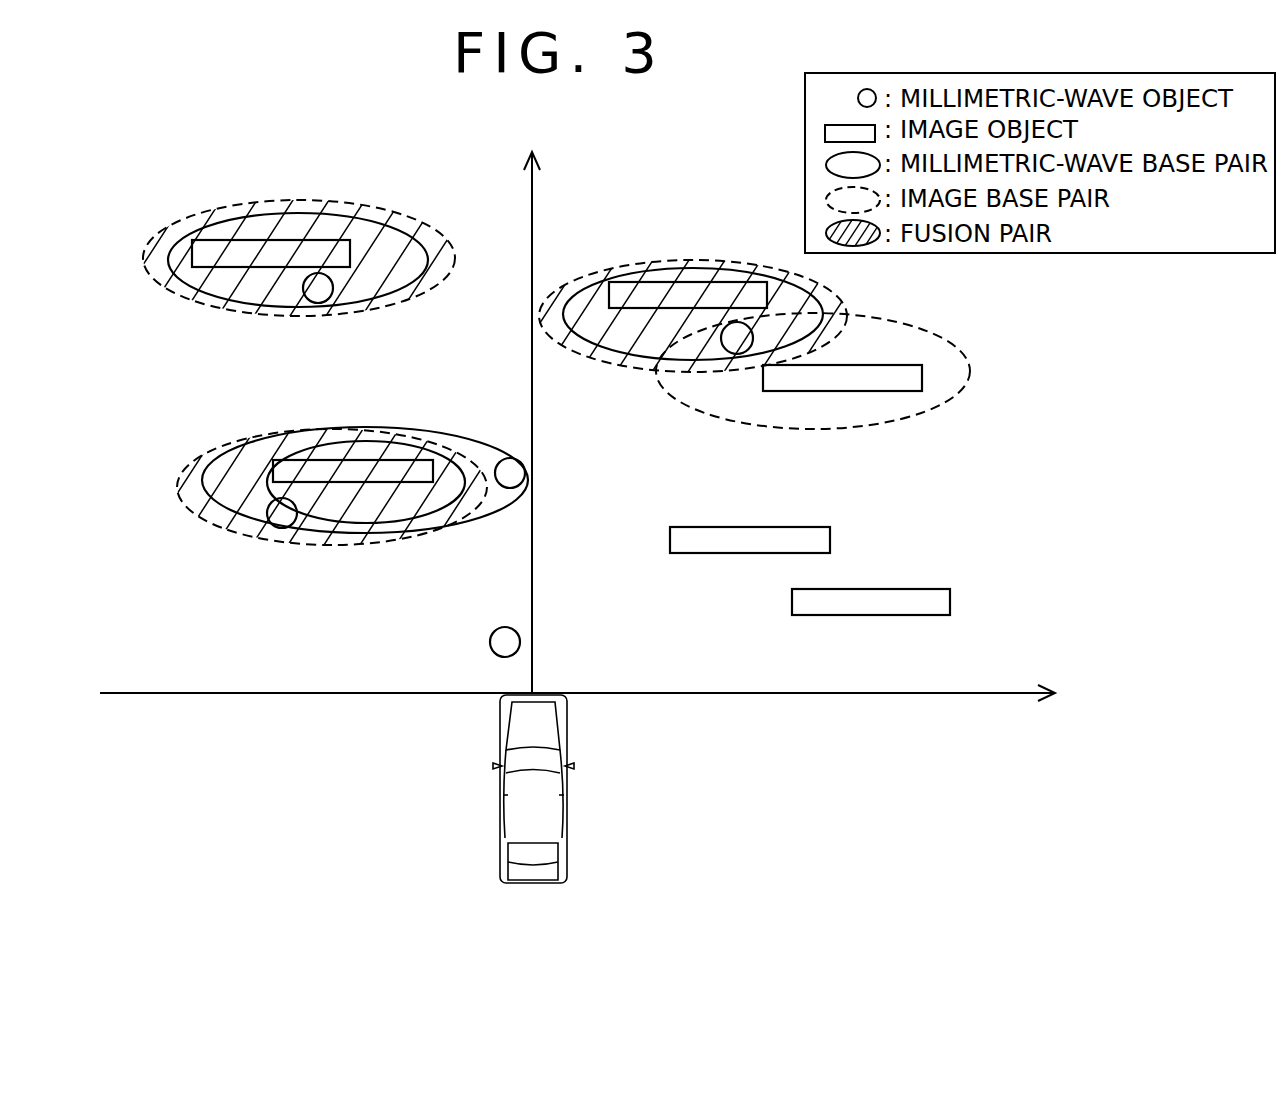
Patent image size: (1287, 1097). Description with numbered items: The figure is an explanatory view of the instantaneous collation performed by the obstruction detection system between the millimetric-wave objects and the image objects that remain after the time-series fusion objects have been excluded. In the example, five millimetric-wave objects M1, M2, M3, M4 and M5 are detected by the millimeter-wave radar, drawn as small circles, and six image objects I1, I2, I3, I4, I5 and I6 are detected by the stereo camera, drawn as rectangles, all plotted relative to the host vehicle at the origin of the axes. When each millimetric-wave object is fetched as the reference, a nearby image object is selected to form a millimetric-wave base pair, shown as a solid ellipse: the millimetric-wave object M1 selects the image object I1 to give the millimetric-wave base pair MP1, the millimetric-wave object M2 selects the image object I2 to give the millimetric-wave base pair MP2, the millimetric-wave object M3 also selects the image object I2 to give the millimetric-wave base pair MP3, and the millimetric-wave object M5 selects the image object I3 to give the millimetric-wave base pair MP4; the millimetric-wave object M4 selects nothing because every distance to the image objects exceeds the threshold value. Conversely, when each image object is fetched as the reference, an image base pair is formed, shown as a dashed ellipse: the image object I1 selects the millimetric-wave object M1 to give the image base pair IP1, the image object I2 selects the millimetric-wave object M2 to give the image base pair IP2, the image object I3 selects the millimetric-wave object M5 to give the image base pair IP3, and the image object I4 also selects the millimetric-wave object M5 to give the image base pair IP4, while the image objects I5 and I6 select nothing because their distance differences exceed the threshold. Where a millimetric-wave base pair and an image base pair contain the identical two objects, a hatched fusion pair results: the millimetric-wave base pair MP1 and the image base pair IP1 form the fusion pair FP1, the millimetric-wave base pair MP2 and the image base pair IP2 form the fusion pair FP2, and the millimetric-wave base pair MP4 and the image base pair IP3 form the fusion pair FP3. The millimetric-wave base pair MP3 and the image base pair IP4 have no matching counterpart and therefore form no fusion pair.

The fusion pair FP1 is at (205, 210).
The image base pair IP1 is at (383, 208).
The millimetric-wave base pair MP1 is at (247, 313).
The image object I1 is at (303, 240).
The millimetric-wave object M1 is at (328, 300).
The fusion pair FP2 is at (207, 450).
The image base pair IP2 is at (285, 430).
The millimetric-wave base pair MP2 is at (238, 523).
The millimetric-wave base pair MP3 is at (490, 443).
The image object I2 is at (403, 458).
The millimetric-wave object M2 is at (297, 530).
The millimetric-wave object M3 is at (498, 507).
The fusion pair FP3 is at (730, 262).
The image base pair IP3 is at (570, 280).
The millimetric-wave base pair MP4 is at (592, 348).
The image object I3 is at (658, 282).
The millimetric-wave object M5 is at (735, 360).
The image base pair IP4 is at (930, 332).
The image object I4 is at (832, 391).
The image object I5 is at (720, 553).
The image object I6 is at (840, 615).
The millimetric-wave object M4 is at (488, 638).